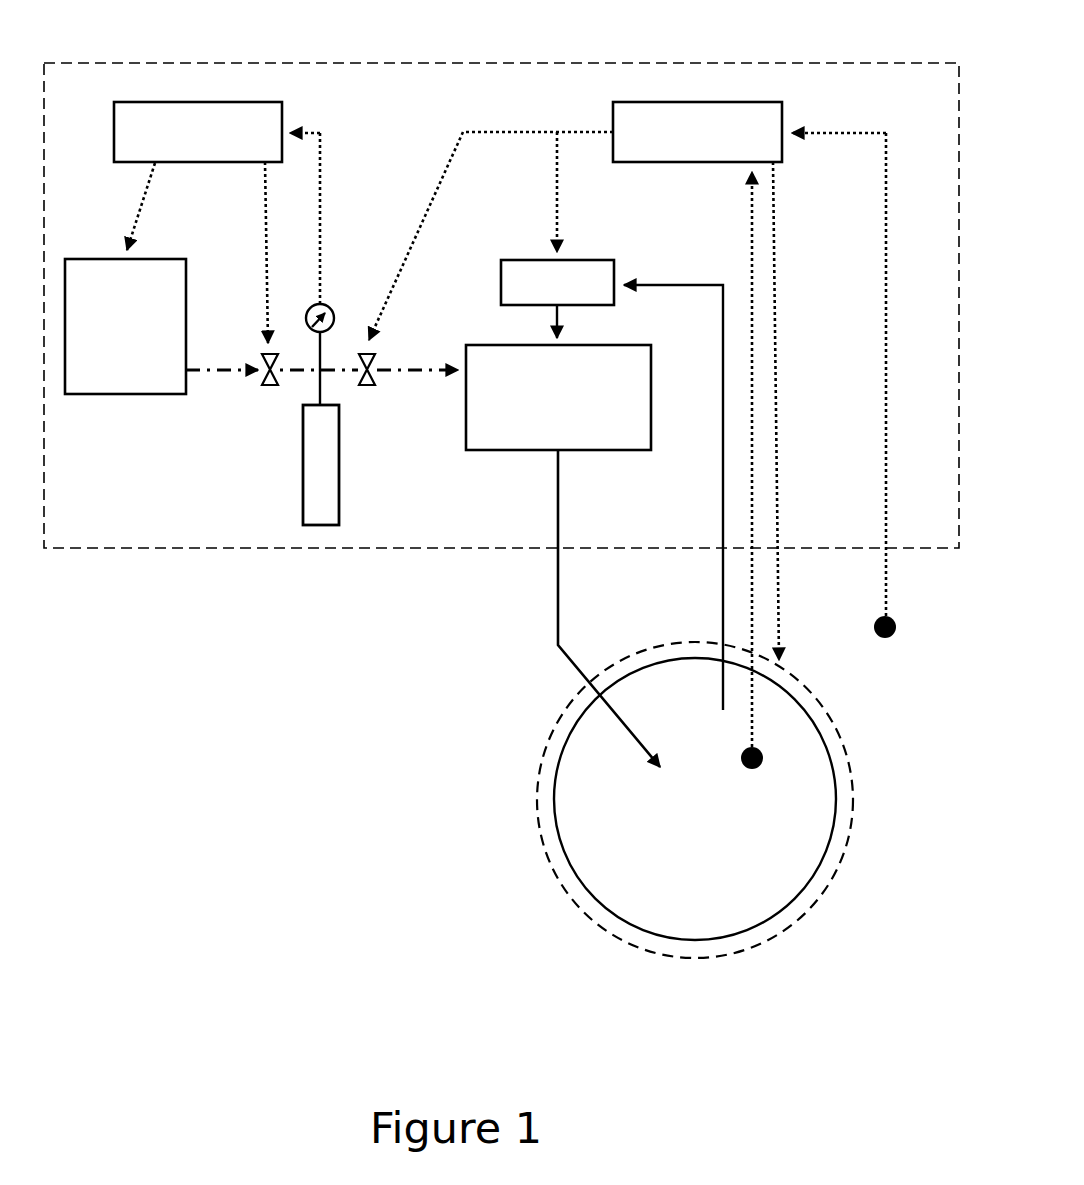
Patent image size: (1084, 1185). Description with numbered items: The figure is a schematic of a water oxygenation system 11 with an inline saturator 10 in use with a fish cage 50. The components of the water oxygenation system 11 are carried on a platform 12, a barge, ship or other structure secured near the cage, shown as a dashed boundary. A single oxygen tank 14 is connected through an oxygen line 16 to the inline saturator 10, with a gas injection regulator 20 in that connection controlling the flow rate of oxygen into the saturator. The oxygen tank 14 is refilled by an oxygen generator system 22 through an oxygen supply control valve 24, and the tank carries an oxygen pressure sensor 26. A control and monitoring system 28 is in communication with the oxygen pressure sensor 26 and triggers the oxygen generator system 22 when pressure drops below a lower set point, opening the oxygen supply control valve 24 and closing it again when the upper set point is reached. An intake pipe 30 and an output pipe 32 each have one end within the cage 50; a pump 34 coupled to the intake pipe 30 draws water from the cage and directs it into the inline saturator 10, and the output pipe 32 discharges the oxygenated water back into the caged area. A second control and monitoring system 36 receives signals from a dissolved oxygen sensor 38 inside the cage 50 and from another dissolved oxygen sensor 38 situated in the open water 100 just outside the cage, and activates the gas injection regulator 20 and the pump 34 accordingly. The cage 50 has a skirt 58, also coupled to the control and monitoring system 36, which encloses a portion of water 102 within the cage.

The inline saturator 10 is at (558, 397).
The water oxygenation system 11 is at (240, 72).
The platform 12 is at (501, 305).
The oxygen tank 14 is at (321, 465).
The oxygen line 16 is at (322, 384).
The gas injection regulator 20 is at (370, 380).
The oxygen generator system 22 is at (125, 278).
The oxygen supply control valve 24 is at (274, 286).
The oxygen pressure sensor 26 is at (324, 269).
The control and monitoring system 28 is at (198, 132).
The intake pipe 30 is at (673, 485).
The output pipe 32 is at (609, 608).
The pump 34 is at (491, 236).
The second control and monitoring system 36 is at (749, 359).
The dissolved oxygen sensor 38 is at (830, 481).
The fish cage 50 is at (632, 800).
The skirt 58 is at (707, 800).
The open water 100 is at (316, 679).
The portion of water 102 is at (699, 866).